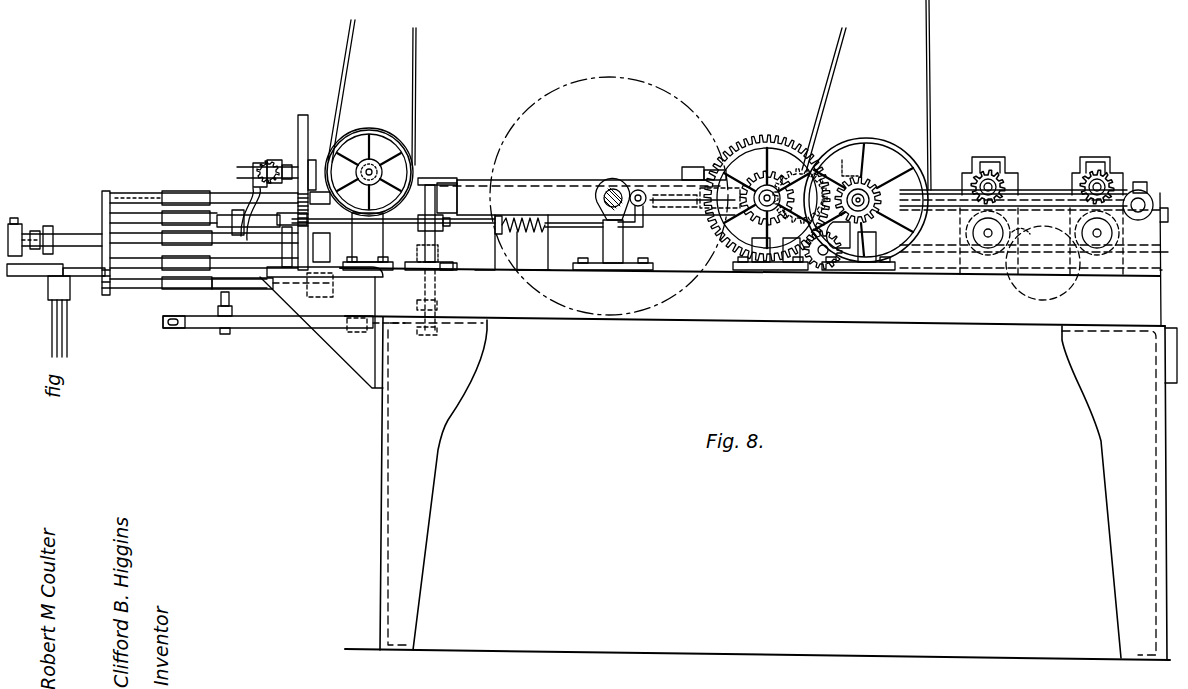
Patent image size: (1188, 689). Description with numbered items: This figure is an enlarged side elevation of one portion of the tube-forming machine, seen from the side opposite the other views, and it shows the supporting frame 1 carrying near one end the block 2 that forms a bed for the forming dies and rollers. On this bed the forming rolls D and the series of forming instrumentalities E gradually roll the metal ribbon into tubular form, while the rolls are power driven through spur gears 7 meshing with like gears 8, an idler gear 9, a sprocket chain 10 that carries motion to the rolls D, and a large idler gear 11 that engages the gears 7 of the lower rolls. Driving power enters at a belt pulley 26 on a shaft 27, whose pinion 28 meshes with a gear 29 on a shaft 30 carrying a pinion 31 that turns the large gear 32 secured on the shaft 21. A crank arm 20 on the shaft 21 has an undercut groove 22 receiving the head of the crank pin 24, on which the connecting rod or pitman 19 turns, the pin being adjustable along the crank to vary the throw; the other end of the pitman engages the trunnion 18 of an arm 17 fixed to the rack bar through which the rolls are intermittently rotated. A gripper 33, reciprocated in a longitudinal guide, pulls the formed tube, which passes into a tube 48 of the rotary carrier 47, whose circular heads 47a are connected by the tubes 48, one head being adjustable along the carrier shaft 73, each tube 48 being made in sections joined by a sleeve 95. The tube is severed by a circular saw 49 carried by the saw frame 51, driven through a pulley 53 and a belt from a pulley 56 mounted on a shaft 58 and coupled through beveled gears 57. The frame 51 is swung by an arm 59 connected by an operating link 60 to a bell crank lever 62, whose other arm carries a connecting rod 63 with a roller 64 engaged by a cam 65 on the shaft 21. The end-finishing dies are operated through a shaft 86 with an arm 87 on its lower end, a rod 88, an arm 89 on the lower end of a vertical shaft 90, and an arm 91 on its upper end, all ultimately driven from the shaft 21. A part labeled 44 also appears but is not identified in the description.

The supporting frame 1 is at (731, 322).
The block 2 is at (1160, 269).
The spur gear 7 is at (781, 264).
The gear 8 is at (843, 158).
The idler gear 9 is at (818, 268).
The sprocket chain 10 is at (935, 268).
The large idler gear 11 is at (1070, 287).
The arm 17 is at (1142, 182).
The trunnion 18 is at (1146, 198).
The connecting rod 19 is at (1036, 200).
The crank arm 20 is at (528, 190).
The shaft 21 is at (613, 190).
The undercut groove 22 is at (668, 215).
The crank pin 24 is at (720, 206).
The belt pulley 26 is at (899, 150).
The shaft 27 is at (866, 190).
The pinion 28 is at (866, 177).
The gear 29 is at (768, 172).
The shaft 30 is at (762, 170).
The pinion 31 is at (789, 172).
The large gear 32 is at (668, 93).
The gripper 33 is at (689, 168).
The arm 44 is at (712, 140).
The rotary carrier 47 is at (126, 289).
The circular heads 47a is at (106, 190).
The longitudinal tubes 48 is at (127, 212).
The circular saw 49 is at (304, 168).
The saw carrying frame 51 is at (265, 160).
The pulley 53 is at (304, 116).
The pulley 56 is at (370, 131).
The beveled gears 57 is at (356, 136).
The shaft 58 is at (376, 160).
The arm 59 is at (250, 185).
The operating link 60 is at (241, 229).
The bell crank lever 62 is at (273, 228).
The connecting rod 63 is at (367, 225).
The roller 64 is at (641, 190).
The cam 65 is at (606, 187).
The carrier shaft 73 is at (68, 234).
The shaft 86 is at (226, 330).
The arm 87 is at (200, 330).
The rod 88 is at (258, 330).
The arm 89 is at (405, 330).
The vertical shaft 90 is at (436, 182).
The arm 91 is at (420, 230).
The sleeve 95 is at (177, 212).
The forming rolls D is at (1027, 219).
The forming instrumentalities E is at (1169, 248).